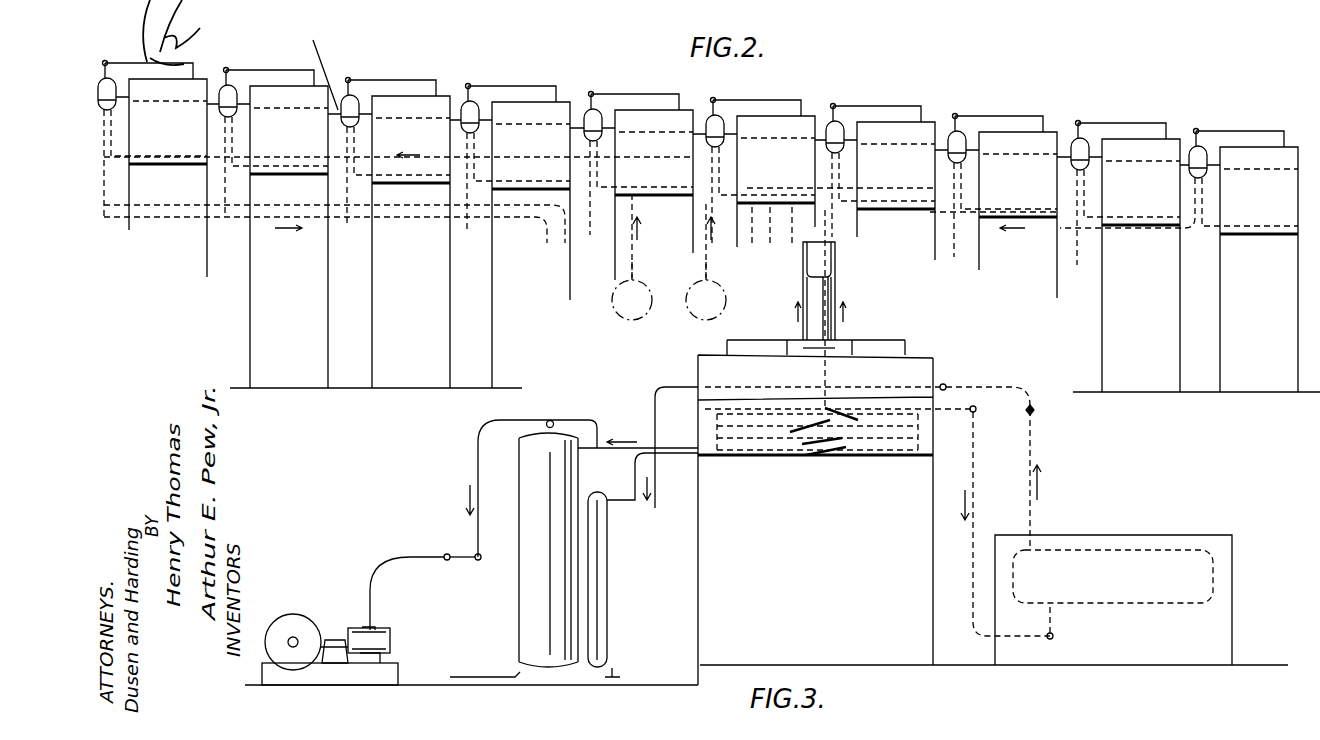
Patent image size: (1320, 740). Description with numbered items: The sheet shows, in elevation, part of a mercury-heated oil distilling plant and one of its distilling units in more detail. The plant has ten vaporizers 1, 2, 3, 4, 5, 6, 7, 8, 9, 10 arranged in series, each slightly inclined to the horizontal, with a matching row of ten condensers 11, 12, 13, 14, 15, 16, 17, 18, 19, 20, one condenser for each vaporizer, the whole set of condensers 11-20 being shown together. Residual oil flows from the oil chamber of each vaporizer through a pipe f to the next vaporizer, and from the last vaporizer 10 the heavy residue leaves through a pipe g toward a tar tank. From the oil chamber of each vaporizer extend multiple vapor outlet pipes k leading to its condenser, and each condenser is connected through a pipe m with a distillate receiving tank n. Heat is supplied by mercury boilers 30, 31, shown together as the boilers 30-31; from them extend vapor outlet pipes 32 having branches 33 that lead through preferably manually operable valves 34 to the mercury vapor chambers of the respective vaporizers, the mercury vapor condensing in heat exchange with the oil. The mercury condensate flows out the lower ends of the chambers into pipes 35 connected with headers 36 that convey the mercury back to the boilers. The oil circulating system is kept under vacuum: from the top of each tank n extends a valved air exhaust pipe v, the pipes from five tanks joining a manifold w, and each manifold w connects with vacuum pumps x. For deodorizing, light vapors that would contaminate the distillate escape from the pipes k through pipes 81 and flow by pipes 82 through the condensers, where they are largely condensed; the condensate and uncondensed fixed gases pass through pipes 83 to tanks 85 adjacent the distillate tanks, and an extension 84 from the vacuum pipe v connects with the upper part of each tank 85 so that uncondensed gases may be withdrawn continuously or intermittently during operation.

In FIG. 2, the vaporizer 1 is at (99, 72).
In FIG. 2, the vaporizer 2 is at (220, 79).
In FIG. 2, the vaporizer 3 is at (342, 89).
In FIG. 2, the vaporizer 4 is at (462, 95).
In FIG. 2, the vaporizer 5 is at (585, 103).
In FIG. 2, the vaporizer 6 is at (707, 109).
In FIG. 2, the vaporizer 7 is at (827, 115).
In FIG. 2, the vaporizer 8 is at (949, 125).
In FIG. 2, the vaporizer 9 is at (1072, 132).
In FIG. 2, the vaporizer 10 is at (1190, 140).
In FIG. 3, the vaporizer 10 is at (927, 363).
In FIG. 2, the condenser 11 is at (168, 178).
In FIG. 2, the condenser 12 is at (289, 237).
In FIG. 2, the condenser 13 is at (411, 242).
In FIG. 2, the condenser 14 is at (531, 245).
In FIG. 2, the condenser 15 is at (654, 195).
In FIG. 2, the condenser 16 is at (776, 181).
In FIG. 2, the condenser 17 is at (896, 191).
In FIG. 2, the condenser 18 is at (1018, 215).
In FIG. 2, the condenser 19 is at (1141, 265).
In FIG. 2, the condenser 20 is at (1259, 269).
In FIG. 3, the condensers 11-20 is at (826, 457).
In FIG. 2, the mercury boiler 30 is at (632, 257).
In FIG. 2, the mercury boiler 31 is at (706, 261).
In FIG. 3, the mercury boilers 30-31 is at (1130, 550).
In FIG. 2, the vapor outlet pipe 32 is at (638, 272).
In FIG. 3, the vapor outlet pipe 32 is at (1032, 446).
In FIG. 3, the branch pipe 33 is at (990, 387).
In FIG. 3, the valve 34 is at (947, 384).
In FIG. 2, the mercury condensate pipe 35 is at (224, 186).
In FIG. 3, the mercury condensate pipe 35 is at (977, 431).
In FIG. 3, the header 36 is at (1055, 636).
In FIG. 3, the vapor escape pipe 81 is at (803, 292).
In FIG. 3, the pipe 82 is at (823, 343).
In FIG. 3, the pipe 83 is at (624, 502).
In FIG. 3, the extension 84 is at (580, 420).
In FIG. 3, the tank 85 is at (602, 580).
In FIG. 2, the pipe f is at (320, 65).
In FIG. 2, the vapor outlet pipe k is at (1254, 134).
In FIG. 3, the vapor outlet pipe k is at (869, 339).
In FIG. 3, the pipe g is at (657, 490).
In FIG. 3, the pipe m is at (617, 450).
In FIG. 3, the distillate receiving tank n is at (525, 587).
In FIG. 3, the air exhaust pipe v is at (477, 466).
In FIG. 3, the manifold w is at (448, 560).
In FIG. 3, the vacuum pump x is at (353, 621).